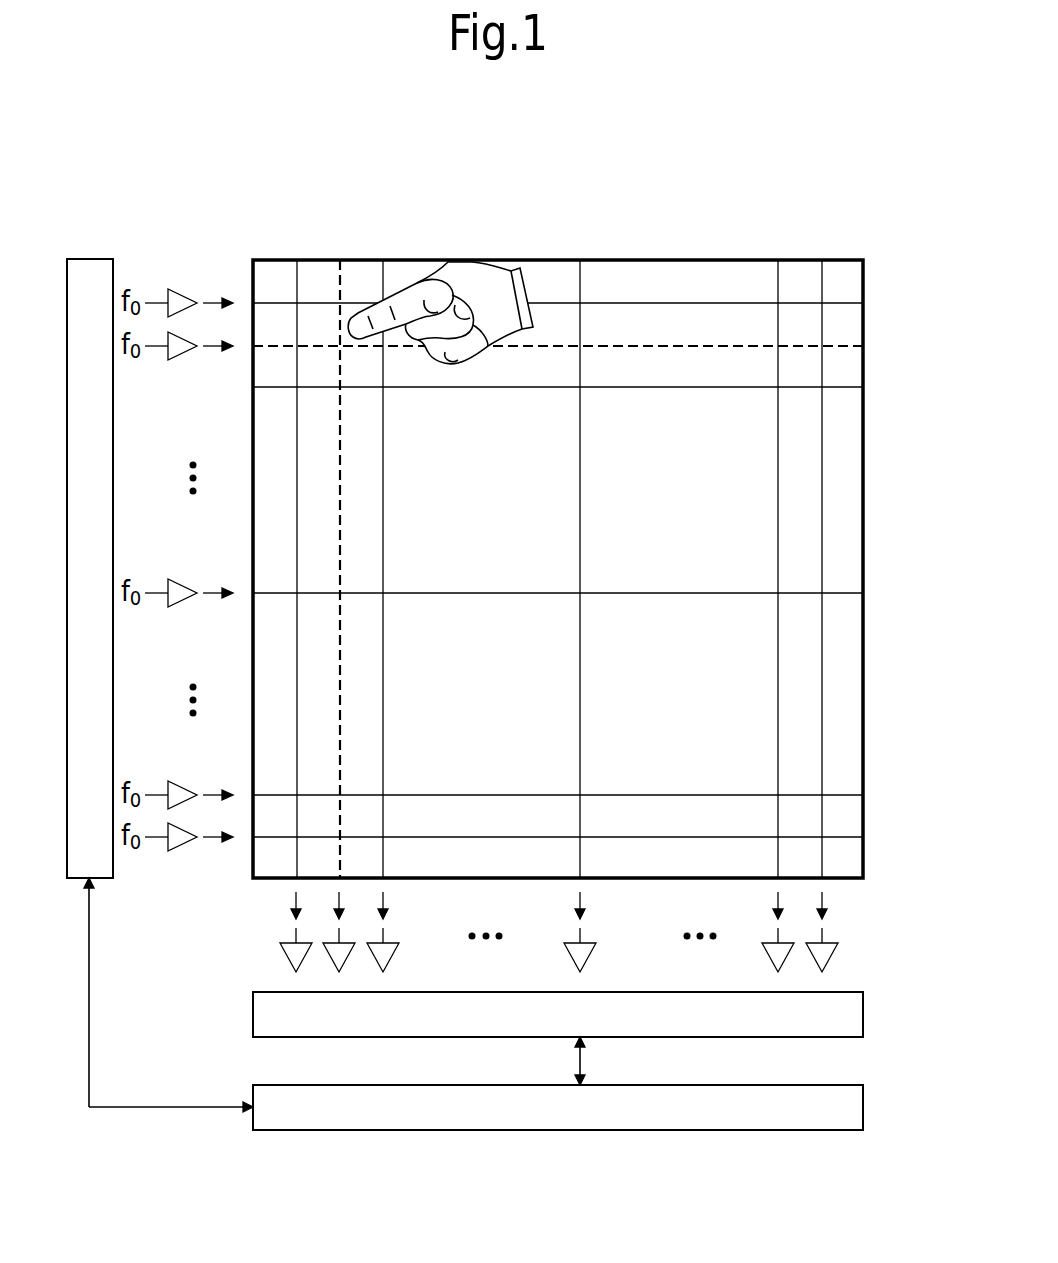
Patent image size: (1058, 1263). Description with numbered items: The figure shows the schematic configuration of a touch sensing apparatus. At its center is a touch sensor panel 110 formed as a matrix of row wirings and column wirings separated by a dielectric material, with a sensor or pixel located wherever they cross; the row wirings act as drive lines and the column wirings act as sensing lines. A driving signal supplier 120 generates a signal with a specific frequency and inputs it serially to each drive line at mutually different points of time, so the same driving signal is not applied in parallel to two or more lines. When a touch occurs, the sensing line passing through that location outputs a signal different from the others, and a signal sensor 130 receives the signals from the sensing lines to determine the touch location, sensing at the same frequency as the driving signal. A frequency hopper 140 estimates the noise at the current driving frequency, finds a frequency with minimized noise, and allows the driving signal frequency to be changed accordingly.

The touch sensor panel 110 is at (711, 250).
The driving signal supplier 120 is at (93, 259).
The signal sensor 130 is at (863, 1005).
The frequency hopper 140 is at (863, 1100).